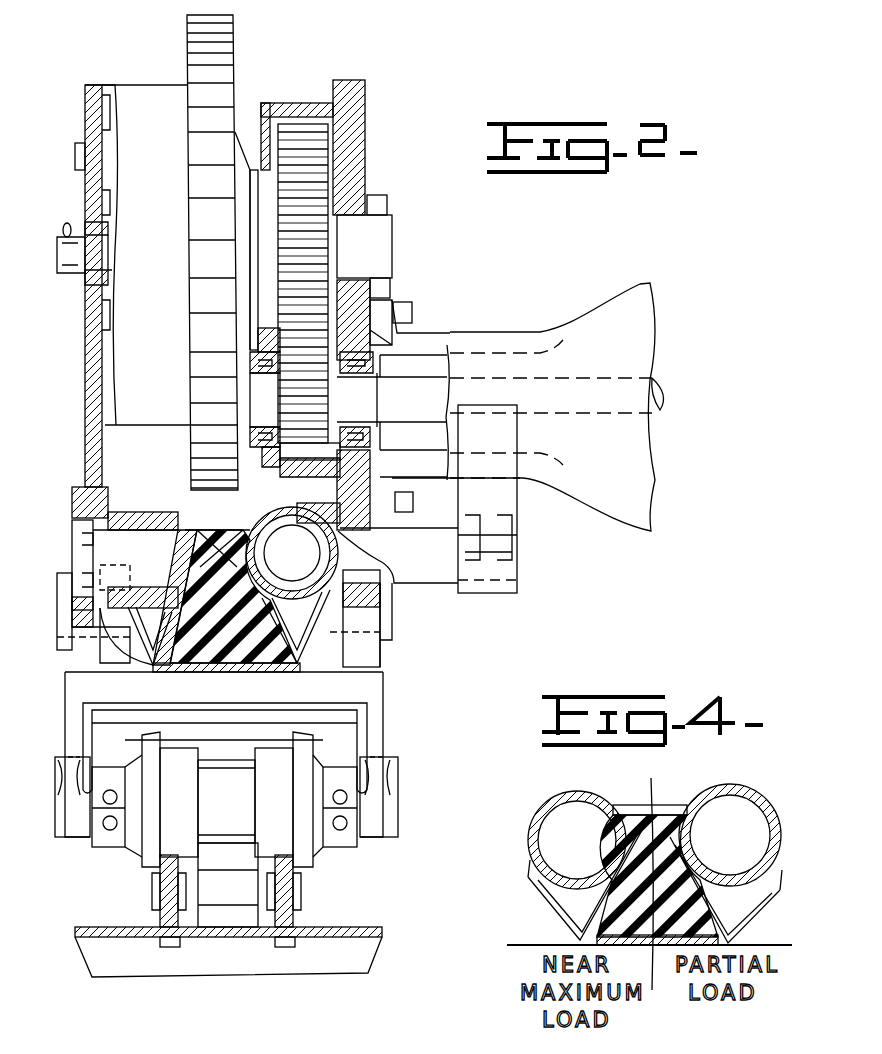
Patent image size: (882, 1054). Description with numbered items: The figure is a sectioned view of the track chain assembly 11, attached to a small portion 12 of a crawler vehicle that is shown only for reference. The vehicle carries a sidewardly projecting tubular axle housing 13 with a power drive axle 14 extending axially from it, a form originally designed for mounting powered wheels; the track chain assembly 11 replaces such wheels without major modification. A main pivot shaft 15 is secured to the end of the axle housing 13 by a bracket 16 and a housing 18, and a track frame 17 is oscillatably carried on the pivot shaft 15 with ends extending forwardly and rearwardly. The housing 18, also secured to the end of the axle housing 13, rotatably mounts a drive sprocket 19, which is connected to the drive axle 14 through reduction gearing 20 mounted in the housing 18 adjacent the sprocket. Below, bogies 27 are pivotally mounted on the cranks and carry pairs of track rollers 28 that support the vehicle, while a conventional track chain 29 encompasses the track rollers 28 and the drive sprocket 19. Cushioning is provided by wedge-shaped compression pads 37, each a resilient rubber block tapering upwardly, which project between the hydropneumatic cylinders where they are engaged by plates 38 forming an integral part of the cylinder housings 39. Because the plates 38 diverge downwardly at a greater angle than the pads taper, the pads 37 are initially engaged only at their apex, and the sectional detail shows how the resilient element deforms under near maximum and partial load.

In FIG. 2, the track chain assembly 11 is at (389, 100).
In FIG. 2, the portion of vehicle 12 is at (615, 300).
In FIG. 2, the axle housing 13 is at (480, 308).
In FIG. 2, the drive axle 14 is at (660, 385).
In FIG. 2, the main pivot shaft 15 is at (440, 578).
In FIG. 2, the bracket 16 is at (512, 572).
In FIG. 2, the track frame 17 is at (72, 682).
In FIG. 2, the housing 18 is at (90, 107).
In FIG. 2, the drive sprocket 19 is at (228, 58).
In FIG. 2, the reduction gearing 20 is at (320, 193).
In FIG. 2, the bogie 27 is at (118, 843).
In FIG. 2, the track roller 28 is at (243, 813).
In FIG. 2, the track chain 29 is at (320, 906).
In FIG. 2, the compression pad 37 is at (230, 665).
In FIG. 4, the compression pad 37 is at (602, 920).
In FIG. 2, the plate 38 is at (218, 589).
In FIG. 4, the plate 38 is at (657, 847).
In FIG. 2, the cylinder housing 39 is at (323, 588).
In FIG. 4, the cylinder housing 39 is at (654, 836).